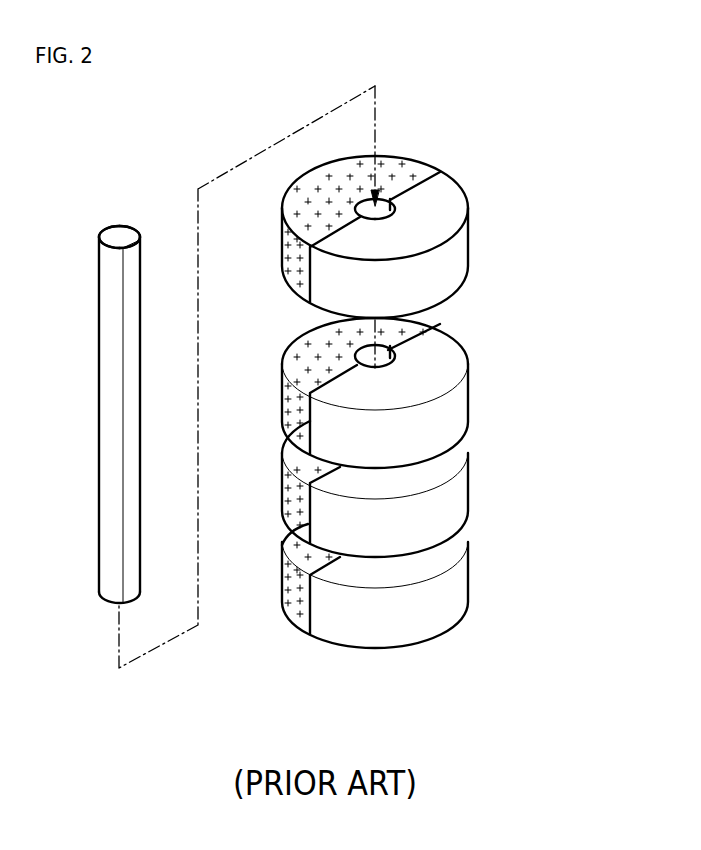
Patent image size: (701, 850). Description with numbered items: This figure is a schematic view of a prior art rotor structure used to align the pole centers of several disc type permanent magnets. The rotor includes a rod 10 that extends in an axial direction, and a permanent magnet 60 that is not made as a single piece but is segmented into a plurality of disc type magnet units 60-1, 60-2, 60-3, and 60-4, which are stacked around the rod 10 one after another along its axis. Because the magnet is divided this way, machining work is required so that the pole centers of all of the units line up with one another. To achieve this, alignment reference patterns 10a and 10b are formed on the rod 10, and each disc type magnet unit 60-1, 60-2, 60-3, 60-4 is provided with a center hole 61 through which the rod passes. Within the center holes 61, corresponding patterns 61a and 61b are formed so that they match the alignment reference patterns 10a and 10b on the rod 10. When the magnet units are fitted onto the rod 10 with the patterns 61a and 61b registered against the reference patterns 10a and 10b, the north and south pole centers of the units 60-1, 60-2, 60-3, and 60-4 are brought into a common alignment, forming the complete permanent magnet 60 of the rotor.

The rod 10 is at (110, 372).
The alignment reference pattern 10a is at (105, 225).
The alignment reference pattern 10b is at (138, 247).
The permanent magnet 60 is at (565, 253).
The disc type magnet unit 60-1 is at (387, 202).
The disc type magnet unit 60-2 is at (453, 404).
The disc type magnet unit 60-3 is at (453, 496).
The disc type magnet unit 60-4 is at (453, 581).
The center hole 61 is at (369, 165).
The corresponding pattern 61a is at (358, 209).
The corresponding pattern 61b is at (397, 210).